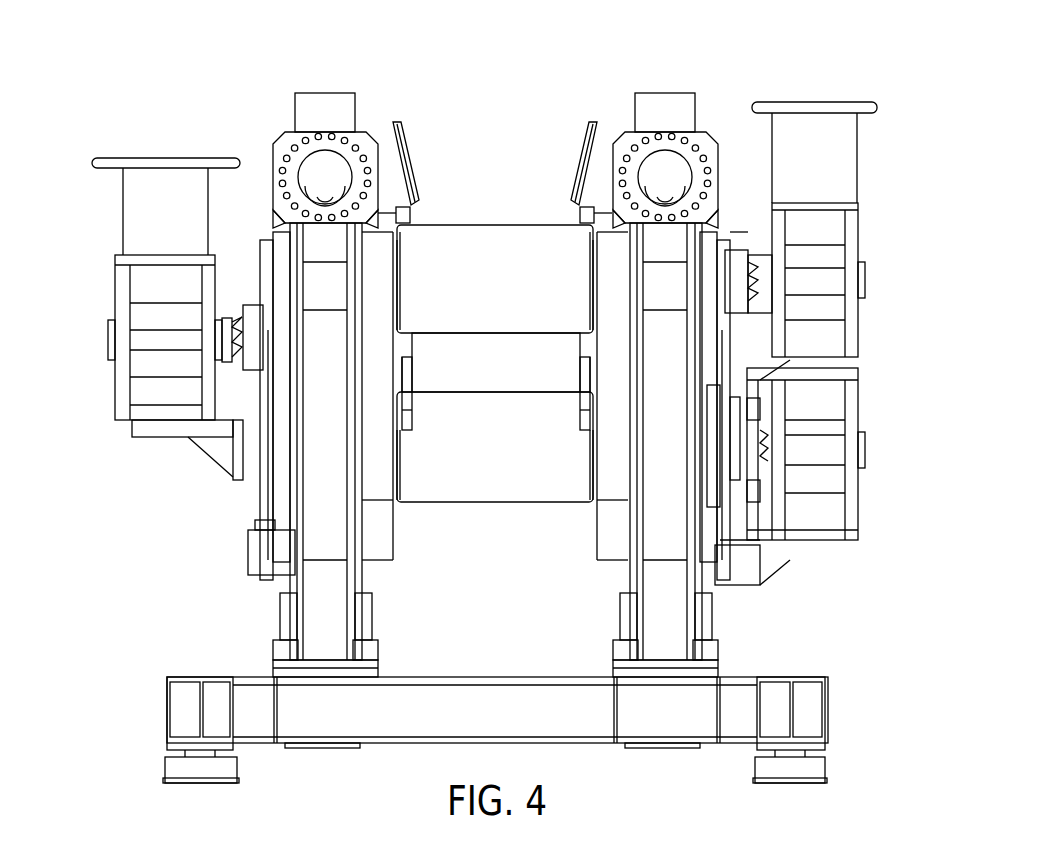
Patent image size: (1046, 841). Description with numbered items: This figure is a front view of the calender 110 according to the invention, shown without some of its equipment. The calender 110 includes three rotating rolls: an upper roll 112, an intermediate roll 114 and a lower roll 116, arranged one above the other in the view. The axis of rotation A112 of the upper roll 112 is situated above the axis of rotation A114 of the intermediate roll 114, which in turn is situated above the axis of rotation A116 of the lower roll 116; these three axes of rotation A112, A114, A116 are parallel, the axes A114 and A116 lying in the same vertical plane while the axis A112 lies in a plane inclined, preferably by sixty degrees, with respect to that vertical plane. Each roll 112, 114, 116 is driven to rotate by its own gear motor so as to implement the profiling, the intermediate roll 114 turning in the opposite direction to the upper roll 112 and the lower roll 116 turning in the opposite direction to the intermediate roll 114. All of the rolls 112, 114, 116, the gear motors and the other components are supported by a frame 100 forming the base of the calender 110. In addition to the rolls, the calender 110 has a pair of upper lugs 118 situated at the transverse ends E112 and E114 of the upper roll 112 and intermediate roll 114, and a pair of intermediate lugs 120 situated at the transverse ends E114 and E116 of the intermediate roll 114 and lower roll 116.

The frame 100 is at (808, 715).
The calender 110 is at (122, 686).
The upper roll 112 is at (505, 238).
The intermediate roll 114 is at (510, 378).
The lower roll 116 is at (488, 488).
The upper lugs 118 is at (393, 123).
The intermediate lugs 120 is at (420, 411).
The transverse ends of the upper roll E112 is at (408, 253).
The transverse ends of the intermediate roll E114 is at (392, 354).
The transverse ends of the lower roll E116 is at (395, 486).
The axis of rotation of the upper roll A112 is at (760, 280).
The axis of rotation of the intermediate roll A114 is at (235, 338).
The axis of rotation of the lower roll A116 is at (760, 450).